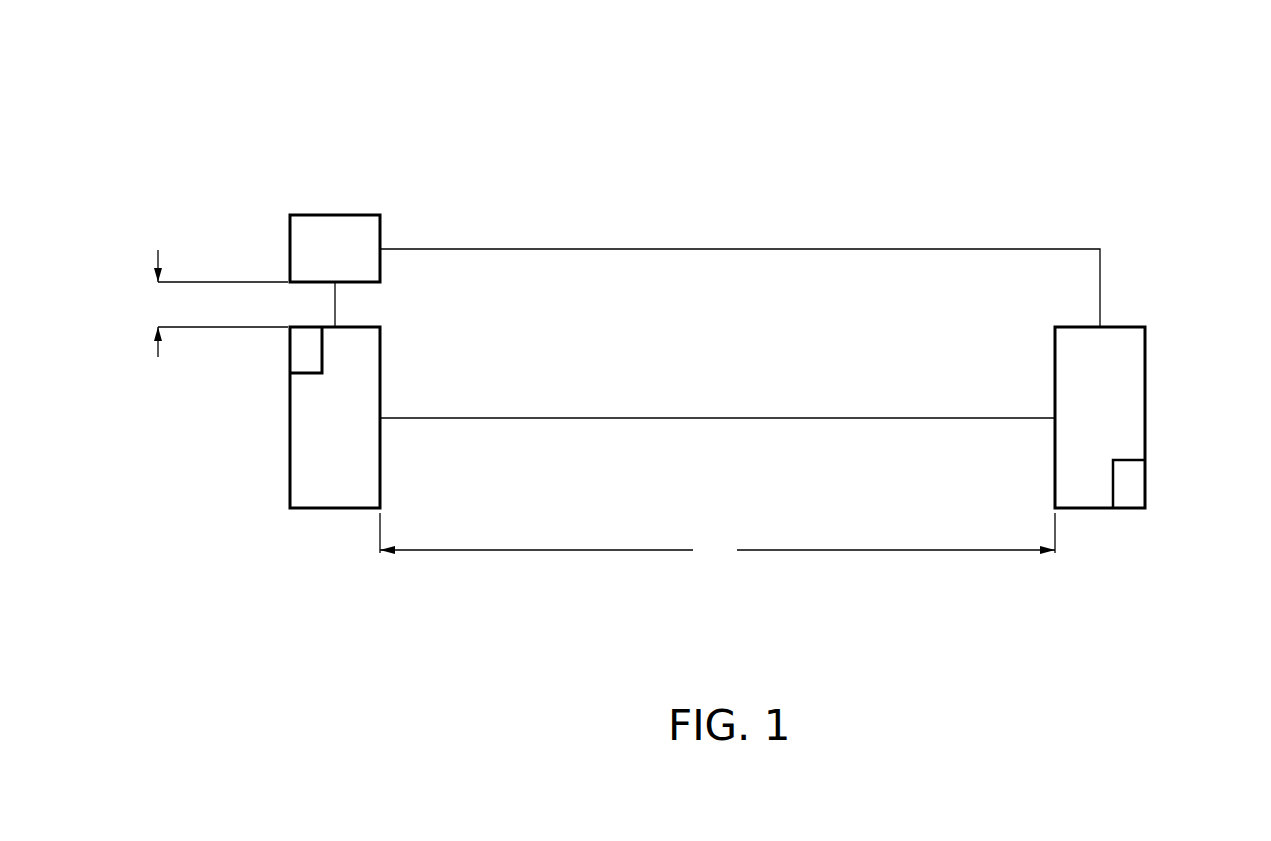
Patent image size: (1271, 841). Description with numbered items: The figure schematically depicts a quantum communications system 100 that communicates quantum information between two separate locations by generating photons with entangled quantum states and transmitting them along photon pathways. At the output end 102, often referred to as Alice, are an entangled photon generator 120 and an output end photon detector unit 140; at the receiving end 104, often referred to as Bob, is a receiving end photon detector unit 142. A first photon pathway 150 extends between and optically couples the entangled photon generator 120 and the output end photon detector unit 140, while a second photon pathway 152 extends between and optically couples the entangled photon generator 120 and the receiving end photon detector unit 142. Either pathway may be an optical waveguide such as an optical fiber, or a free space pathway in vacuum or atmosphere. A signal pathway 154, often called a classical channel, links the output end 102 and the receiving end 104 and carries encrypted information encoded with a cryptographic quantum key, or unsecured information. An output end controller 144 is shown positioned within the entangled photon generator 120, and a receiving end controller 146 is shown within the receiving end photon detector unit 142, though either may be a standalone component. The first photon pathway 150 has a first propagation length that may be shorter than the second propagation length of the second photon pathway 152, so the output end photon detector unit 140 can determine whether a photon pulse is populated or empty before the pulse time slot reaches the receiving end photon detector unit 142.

The quantum communications system 100 is at (687, 300).
The output end 102 is at (334, 308).
The receiving end 104 is at (1139, 359).
The entangled photon generator 120 is at (380, 370).
The output end photon detector unit 140 is at (290, 243).
The receiving end photon detector unit 142 is at (1145, 352).
The output end controller 144 is at (290, 359).
The receiving end controller 146 is at (1138, 487).
The first photon pathway 150 is at (338, 305).
The second photon pathway 152 is at (717, 419).
The signal pathway 154 is at (693, 250).